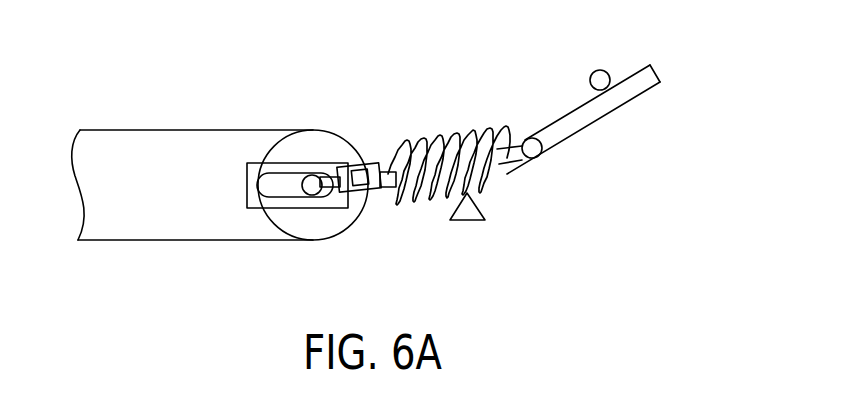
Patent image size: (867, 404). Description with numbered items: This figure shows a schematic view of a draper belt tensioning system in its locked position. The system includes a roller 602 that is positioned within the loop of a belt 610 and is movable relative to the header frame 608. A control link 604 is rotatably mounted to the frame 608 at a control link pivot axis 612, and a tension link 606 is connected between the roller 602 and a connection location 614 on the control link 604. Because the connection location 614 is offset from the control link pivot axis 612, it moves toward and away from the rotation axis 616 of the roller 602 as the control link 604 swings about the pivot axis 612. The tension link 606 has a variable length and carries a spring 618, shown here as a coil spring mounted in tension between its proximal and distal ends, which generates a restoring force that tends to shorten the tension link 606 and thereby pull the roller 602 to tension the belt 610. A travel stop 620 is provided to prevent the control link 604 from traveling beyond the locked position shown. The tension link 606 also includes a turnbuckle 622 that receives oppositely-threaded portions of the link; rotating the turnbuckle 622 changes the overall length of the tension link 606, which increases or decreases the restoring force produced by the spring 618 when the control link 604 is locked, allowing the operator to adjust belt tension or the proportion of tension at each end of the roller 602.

The roller 602 is at (290, 147).
The control link 604 is at (598, 110).
The tension link 606 is at (380, 142).
The header frame 608 is at (262, 204).
The belt 610 is at (157, 130).
The control link pivot axis 612 is at (474, 192).
The connection location 614 is at (527, 140).
The rotation axis 616 is at (315, 193).
The spring 618 is at (448, 130).
The travel stop 620 is at (599, 71).
The turnbuckle 622 is at (352, 163).